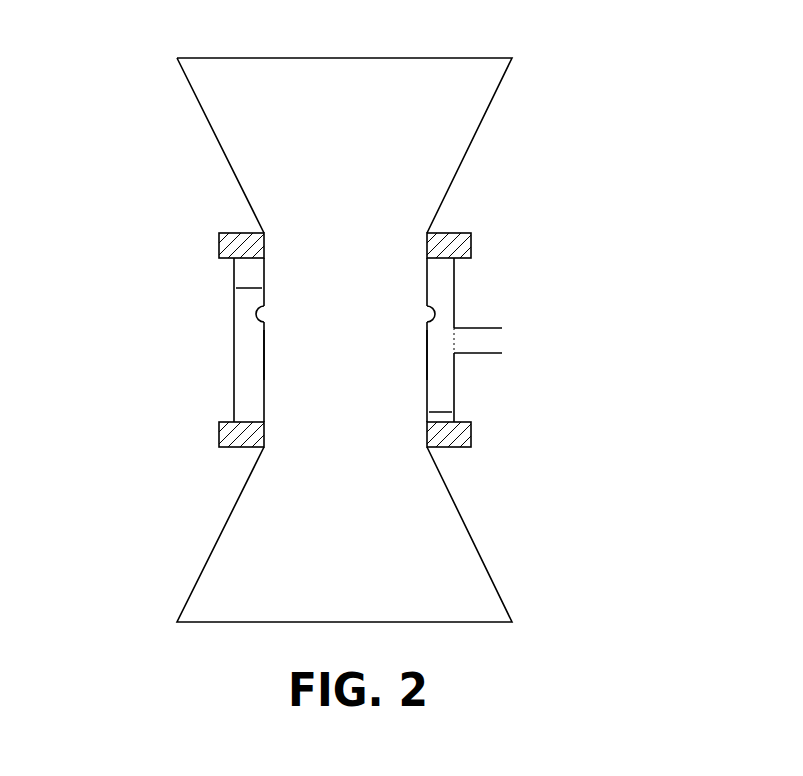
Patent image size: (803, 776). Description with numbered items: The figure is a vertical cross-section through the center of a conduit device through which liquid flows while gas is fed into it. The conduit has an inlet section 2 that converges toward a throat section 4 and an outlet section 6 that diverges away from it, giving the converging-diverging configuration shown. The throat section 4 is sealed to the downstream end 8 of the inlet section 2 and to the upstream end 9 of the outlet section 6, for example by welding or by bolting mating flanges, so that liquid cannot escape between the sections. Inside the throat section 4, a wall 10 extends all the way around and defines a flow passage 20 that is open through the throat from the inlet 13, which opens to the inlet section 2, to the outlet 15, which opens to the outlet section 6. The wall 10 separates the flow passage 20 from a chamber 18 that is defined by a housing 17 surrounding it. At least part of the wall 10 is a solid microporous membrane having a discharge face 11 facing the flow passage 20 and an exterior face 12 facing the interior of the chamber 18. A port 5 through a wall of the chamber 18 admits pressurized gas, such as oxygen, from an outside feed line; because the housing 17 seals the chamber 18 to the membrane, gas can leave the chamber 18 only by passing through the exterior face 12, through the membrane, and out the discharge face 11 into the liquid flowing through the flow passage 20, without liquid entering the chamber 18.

The inlet section 2 is at (497, 90).
The throat section 4 is at (518, 277).
The port 5 is at (500, 343).
The outlet section 6 is at (483, 563).
The downstream end of inlet section 8 is at (428, 233).
The upstream end of outlet section 9 is at (240, 447).
The wall 10 is at (264, 385).
The discharge face 11 is at (264, 358).
The exterior face 12 is at (264, 310).
The inlet 13 is at (366, 230).
The outlet 15 is at (366, 477).
The housing 17 is at (234, 298).
The chamber 18 is at (346, 339).
The flow passage 20 is at (362, 355).